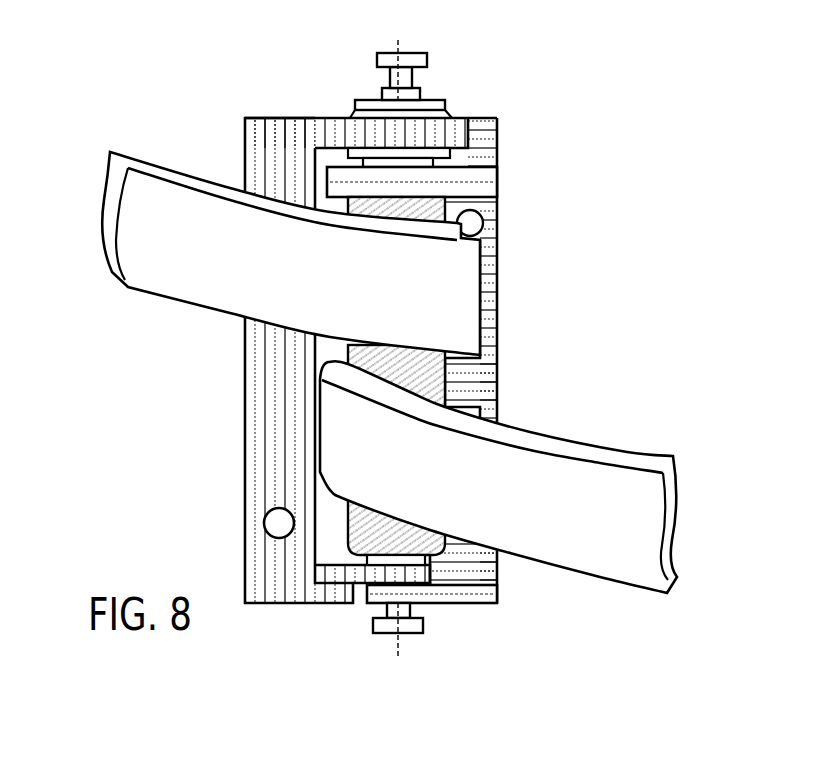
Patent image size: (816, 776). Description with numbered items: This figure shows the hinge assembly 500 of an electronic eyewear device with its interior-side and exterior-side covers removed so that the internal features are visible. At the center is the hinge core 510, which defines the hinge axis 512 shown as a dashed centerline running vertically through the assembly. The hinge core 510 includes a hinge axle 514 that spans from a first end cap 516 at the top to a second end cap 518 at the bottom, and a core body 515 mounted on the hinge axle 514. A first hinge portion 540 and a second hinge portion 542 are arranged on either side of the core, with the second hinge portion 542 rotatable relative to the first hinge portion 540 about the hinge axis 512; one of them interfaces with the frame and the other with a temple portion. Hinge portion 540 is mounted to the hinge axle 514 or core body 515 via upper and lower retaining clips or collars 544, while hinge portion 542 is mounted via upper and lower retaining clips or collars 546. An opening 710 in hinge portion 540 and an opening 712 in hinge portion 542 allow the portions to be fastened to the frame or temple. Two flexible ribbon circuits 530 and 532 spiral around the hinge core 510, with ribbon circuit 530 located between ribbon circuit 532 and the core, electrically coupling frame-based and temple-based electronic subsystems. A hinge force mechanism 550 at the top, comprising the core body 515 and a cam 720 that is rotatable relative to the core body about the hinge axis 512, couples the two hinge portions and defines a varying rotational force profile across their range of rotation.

The hinge assembly 500 is at (545, 143).
The hinge core 510 is at (340, 350).
The hinge axis 512 is at (403, 350).
The hinge axle 514 is at (402, 78).
The core body 515 is at (430, 382).
The first end cap 516 is at (421, 60).
The second end cap 518 is at (377, 625).
The flexible ribbon circuit 530 is at (173, 177).
The flexible ribbon circuit 532 is at (138, 238).
The first hinge portion 540 is at (267, 417).
The second hinge portion 542 is at (487, 405).
The retaining clip or collar 544 is at (452, 125).
The retaining clip or collar 546 is at (337, 177).
The hinge force mechanism 550 is at (355, 92).
The opening 710 is at (283, 523).
The opening 712 is at (470, 223).
The cam 720 is at (362, 117).